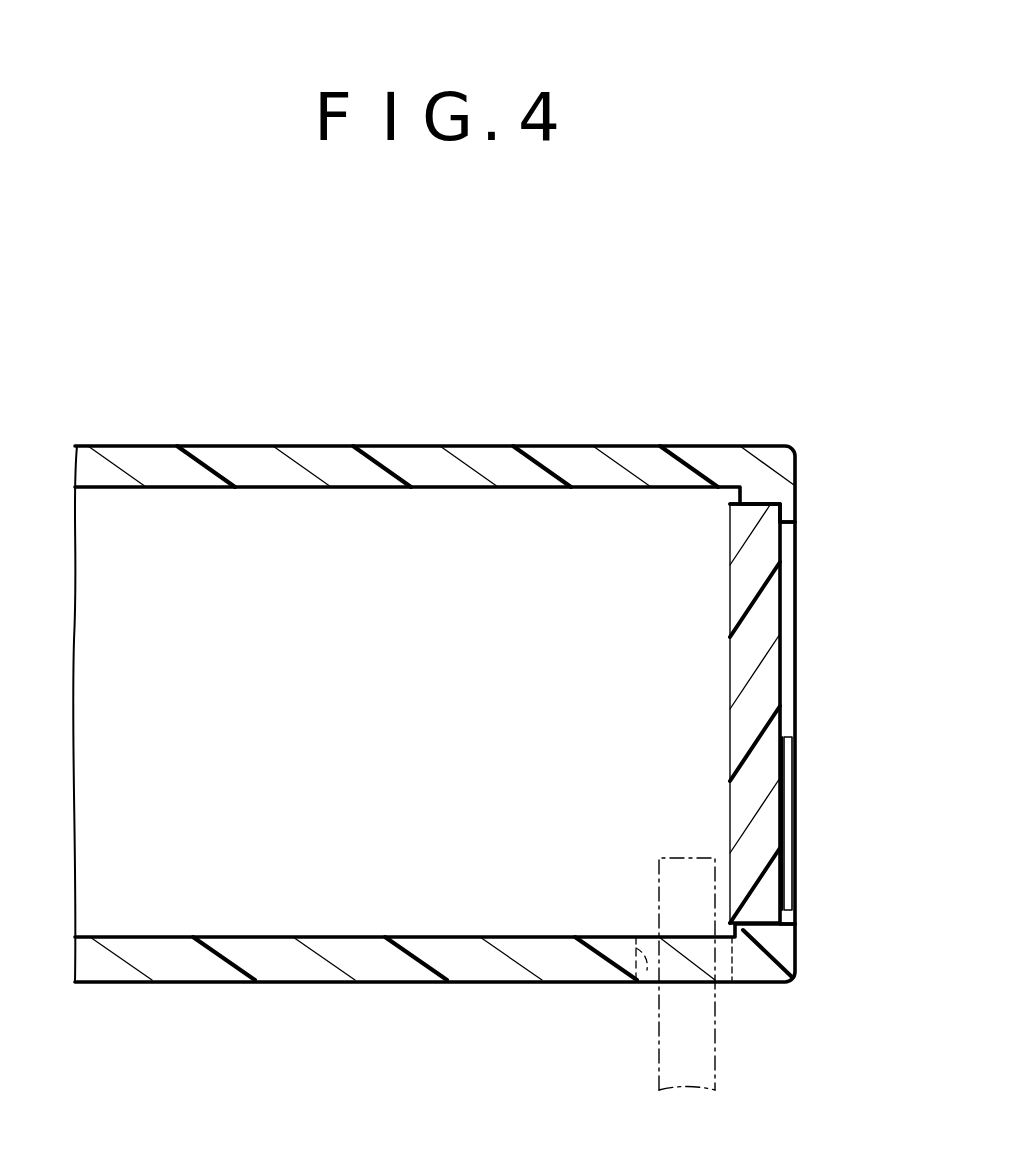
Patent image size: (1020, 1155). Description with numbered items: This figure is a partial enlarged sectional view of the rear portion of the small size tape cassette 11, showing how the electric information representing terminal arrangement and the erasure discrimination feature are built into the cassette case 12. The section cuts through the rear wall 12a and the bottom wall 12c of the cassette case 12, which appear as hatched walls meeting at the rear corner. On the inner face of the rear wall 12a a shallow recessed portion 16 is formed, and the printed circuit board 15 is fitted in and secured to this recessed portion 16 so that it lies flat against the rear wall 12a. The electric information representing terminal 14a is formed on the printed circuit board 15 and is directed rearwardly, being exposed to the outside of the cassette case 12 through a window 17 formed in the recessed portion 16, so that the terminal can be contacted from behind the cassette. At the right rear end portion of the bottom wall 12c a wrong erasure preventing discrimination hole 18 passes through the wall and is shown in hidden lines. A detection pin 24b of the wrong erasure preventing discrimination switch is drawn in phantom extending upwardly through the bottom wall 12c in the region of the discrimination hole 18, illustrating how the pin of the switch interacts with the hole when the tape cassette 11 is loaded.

The tape cassette 11 is at (574, 300).
The cassette case 12 is at (454, 445).
The rear wall 12a is at (797, 921).
The bottom wall 12c is at (401, 967).
The electric information representing terminal 14a is at (797, 851).
The printed circuit board 15 is at (752, 663).
The recessed portion 16 is at (777, 508).
The window 17 is at (786, 527).
The wrong erasure preventing discrimination hole 18 is at (647, 985).
The detection pin 24b is at (665, 857).